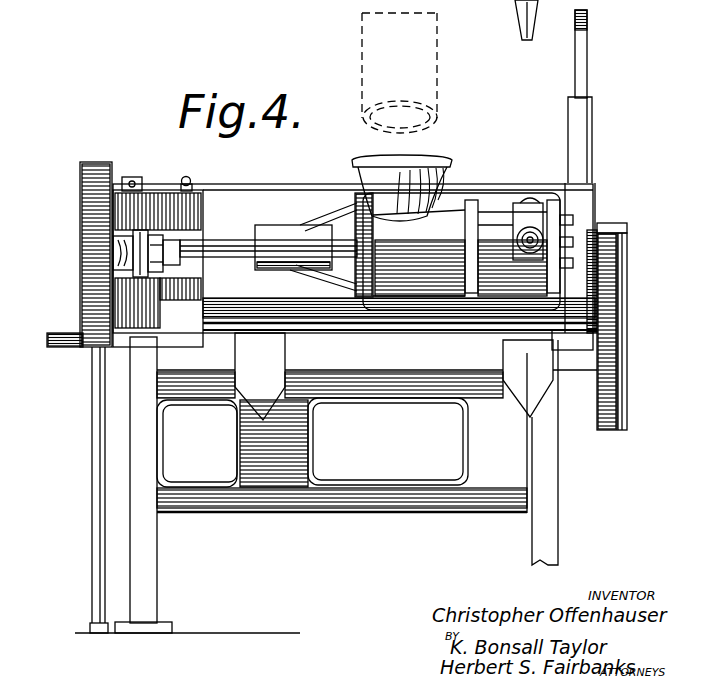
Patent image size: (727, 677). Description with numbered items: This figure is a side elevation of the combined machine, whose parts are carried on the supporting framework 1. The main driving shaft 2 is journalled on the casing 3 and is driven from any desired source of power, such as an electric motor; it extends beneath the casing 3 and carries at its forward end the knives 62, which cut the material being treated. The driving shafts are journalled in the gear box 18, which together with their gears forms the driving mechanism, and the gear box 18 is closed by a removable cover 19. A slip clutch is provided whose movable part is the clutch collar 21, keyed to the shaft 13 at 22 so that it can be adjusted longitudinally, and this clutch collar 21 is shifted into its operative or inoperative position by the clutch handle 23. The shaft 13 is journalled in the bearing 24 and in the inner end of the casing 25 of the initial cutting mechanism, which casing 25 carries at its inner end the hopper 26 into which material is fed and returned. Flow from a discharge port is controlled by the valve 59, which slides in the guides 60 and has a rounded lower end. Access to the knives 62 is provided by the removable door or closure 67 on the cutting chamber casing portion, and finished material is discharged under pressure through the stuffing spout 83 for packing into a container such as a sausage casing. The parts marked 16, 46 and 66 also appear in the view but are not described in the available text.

The supporting framework 1 is at (408, 500).
The main driving shaft 2 is at (70, 352).
The casing 3 is at (311, 175).
The shaft 13 is at (250, 246).
The post 16 is at (87, 220).
The gear box 18 is at (158, 268).
The removable cover 19 is at (185, 177).
The clutch collar 21 is at (136, 236).
The key 22 is at (205, 244).
The clutch handle 23 is at (140, 277).
The bearing 24 is at (283, 255).
The casing of the initial cutting mechanism 25 is at (442, 213).
The hopper 26 is at (405, 158).
The gear 46 is at (529, 203).
The valve 59 is at (597, 62).
The guides 60 is at (580, 140).
The knives 62 is at (453, 52).
The rack 66 is at (613, 363).
The removable door or closure 67 is at (631, 275).
The stuffing spout 83 is at (566, 218).